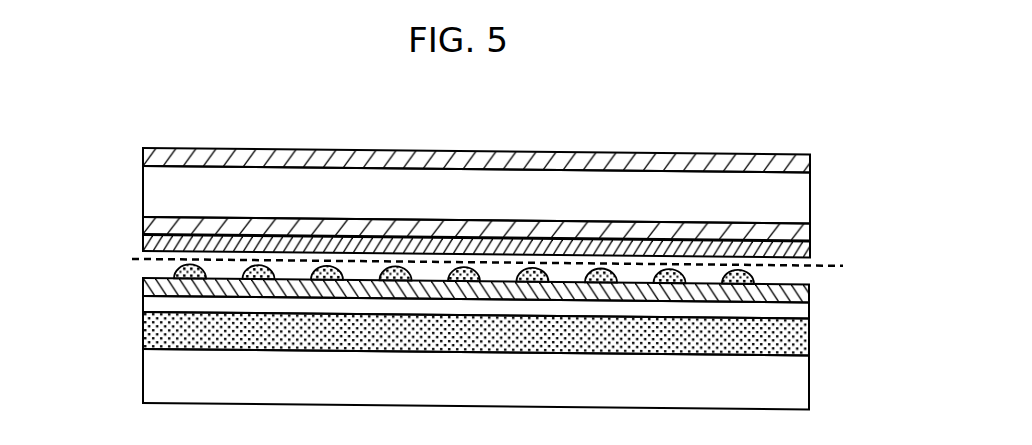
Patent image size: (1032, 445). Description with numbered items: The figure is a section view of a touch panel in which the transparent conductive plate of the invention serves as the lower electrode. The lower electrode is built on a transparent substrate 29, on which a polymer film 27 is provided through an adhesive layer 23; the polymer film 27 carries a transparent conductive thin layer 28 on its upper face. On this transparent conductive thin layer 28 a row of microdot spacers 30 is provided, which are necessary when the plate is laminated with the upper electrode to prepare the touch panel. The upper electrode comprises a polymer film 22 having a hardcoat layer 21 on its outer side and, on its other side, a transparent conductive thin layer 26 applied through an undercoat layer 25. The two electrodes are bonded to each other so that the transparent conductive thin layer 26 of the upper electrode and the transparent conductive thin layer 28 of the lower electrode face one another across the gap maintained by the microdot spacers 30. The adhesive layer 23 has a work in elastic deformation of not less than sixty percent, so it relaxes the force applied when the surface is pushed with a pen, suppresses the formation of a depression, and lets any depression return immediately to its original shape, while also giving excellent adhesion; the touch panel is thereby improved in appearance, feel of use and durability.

The hardcoat layer 21 is at (143, 150).
The polymer film 22 is at (811, 203).
The adhesive layer 23 is at (810, 344).
The undercoat layer 25 is at (143, 225).
The transparent conductive thin layer 26 is at (811, 250).
The polymer film 27 is at (143, 303).
The transparent conductive thin layer 28 is at (810, 294).
The transparent substrate 29 is at (143, 380).
The microdot spacers 30 is at (178, 268).